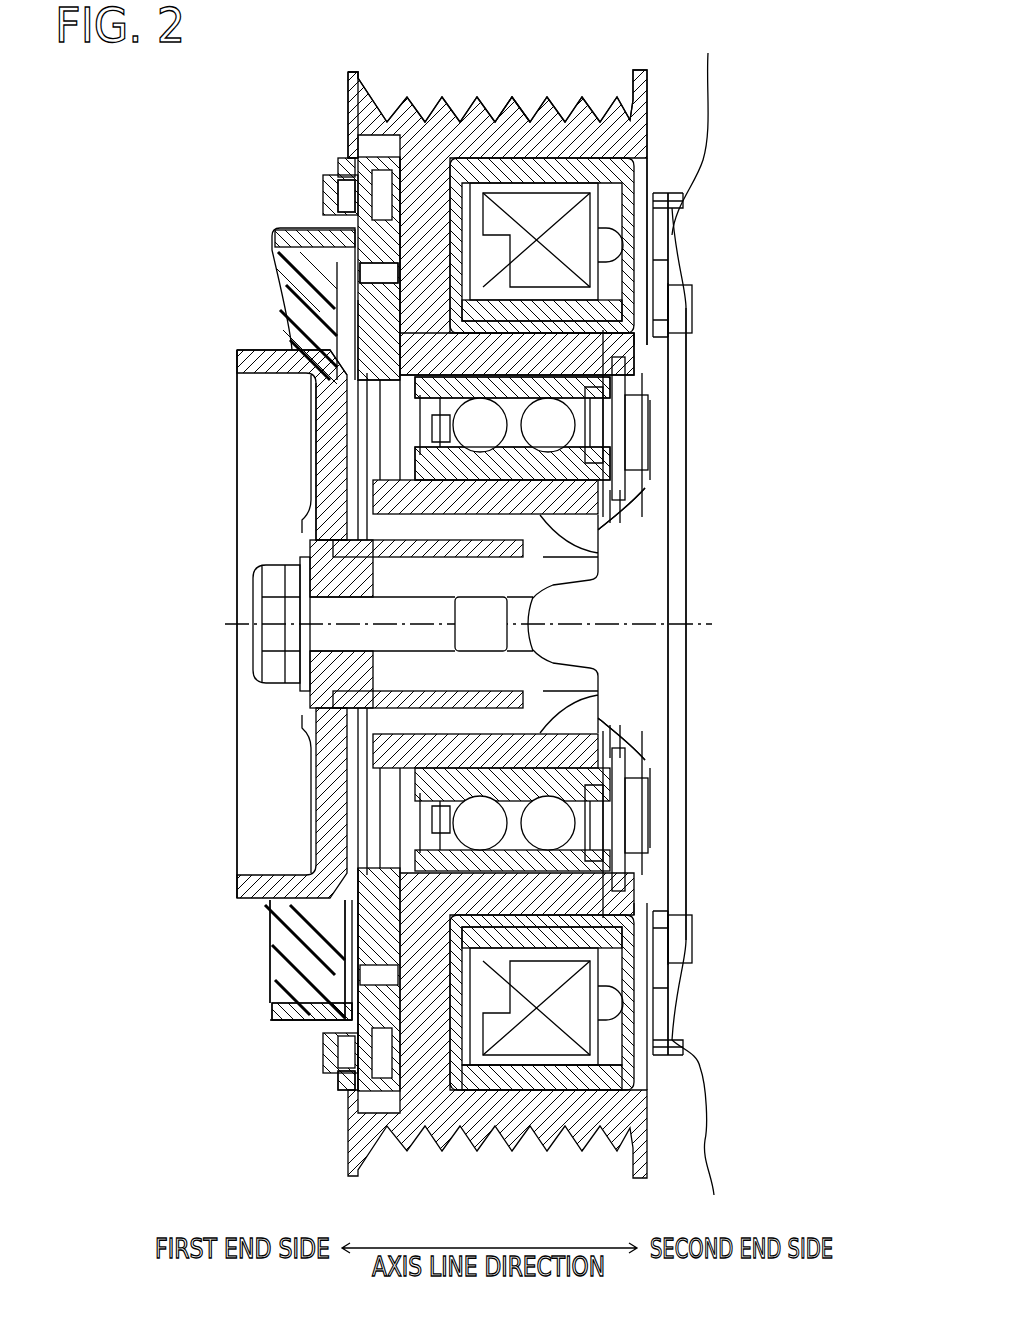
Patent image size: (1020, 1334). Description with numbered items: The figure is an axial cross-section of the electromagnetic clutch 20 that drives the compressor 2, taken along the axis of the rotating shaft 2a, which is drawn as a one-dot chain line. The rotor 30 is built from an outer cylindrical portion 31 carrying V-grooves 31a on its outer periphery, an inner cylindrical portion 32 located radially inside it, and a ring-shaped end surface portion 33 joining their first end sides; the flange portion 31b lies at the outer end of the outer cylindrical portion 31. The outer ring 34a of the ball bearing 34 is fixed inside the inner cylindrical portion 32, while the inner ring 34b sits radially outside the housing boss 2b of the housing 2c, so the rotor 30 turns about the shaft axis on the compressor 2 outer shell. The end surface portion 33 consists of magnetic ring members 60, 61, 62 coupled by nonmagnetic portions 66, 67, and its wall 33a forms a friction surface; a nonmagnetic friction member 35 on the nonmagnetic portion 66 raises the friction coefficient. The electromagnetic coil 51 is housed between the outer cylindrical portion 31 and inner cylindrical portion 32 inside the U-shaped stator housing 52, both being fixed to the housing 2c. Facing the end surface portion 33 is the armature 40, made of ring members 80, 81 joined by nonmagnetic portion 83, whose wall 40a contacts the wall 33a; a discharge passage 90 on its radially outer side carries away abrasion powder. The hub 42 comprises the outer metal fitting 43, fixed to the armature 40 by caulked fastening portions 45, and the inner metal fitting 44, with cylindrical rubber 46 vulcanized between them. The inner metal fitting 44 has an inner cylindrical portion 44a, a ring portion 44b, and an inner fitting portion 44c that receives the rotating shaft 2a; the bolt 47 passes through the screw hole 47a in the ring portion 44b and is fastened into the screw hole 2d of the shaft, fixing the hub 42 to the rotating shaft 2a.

The compressor 2 is at (699, 497).
The rotating shaft 2a is at (600, 690).
The housing boss 2b is at (600, 553).
The housing 2c is at (680, 520).
The screw hole 2d is at (500, 640).
The electromagnetic clutch 20 is at (285, 1174).
The rotor 30 is at (778, 50).
The outer cylindrical portion 31 is at (650, 63).
The V-grooves 31a is at (522, 100).
The flange portion 31b is at (356, 72).
The inner cylindrical portion 32 is at (648, 317).
The end surface portion 33 is at (586, 339).
The wall 33a is at (408, 317).
The ball bearing 34 is at (565, 433).
The outer ring 34a is at (580, 350).
The inner ring 34b is at (560, 467).
The friction member 35 is at (441, 233).
The armature 40 is at (360, 1110).
The wall 40a is at (400, 838).
The hub 42 is at (140, 880).
The outer metal fitting 43 is at (285, 970).
The inner metal fitting 44 is at (236, 898).
The inner cylindrical portion 44a is at (322, 438).
The ring portion 44b is at (345, 512).
The inner fitting portion 44c is at (410, 545).
The fastening portions 45 is at (421, 223).
The rubber 46 is at (300, 920).
The bolt 47 is at (268, 672).
The screw hole 47a is at (303, 712).
The electromagnetic coil 51 is at (560, 1037).
The stator housing 52 is at (620, 938).
The ring member 60 is at (330, 185).
The ring member 61 is at (428, 290).
The ring member 62 is at (368, 355).
The nonmagnetic portion 66 is at (330, 210).
The nonmagnetic portion 67 is at (420, 350).
The ring member 80 is at (345, 870).
The ring member 81 is at (380, 1060).
The nonmagnetic portion 83 is at (425, 1050).
The discharge passage 90 is at (360, 135).